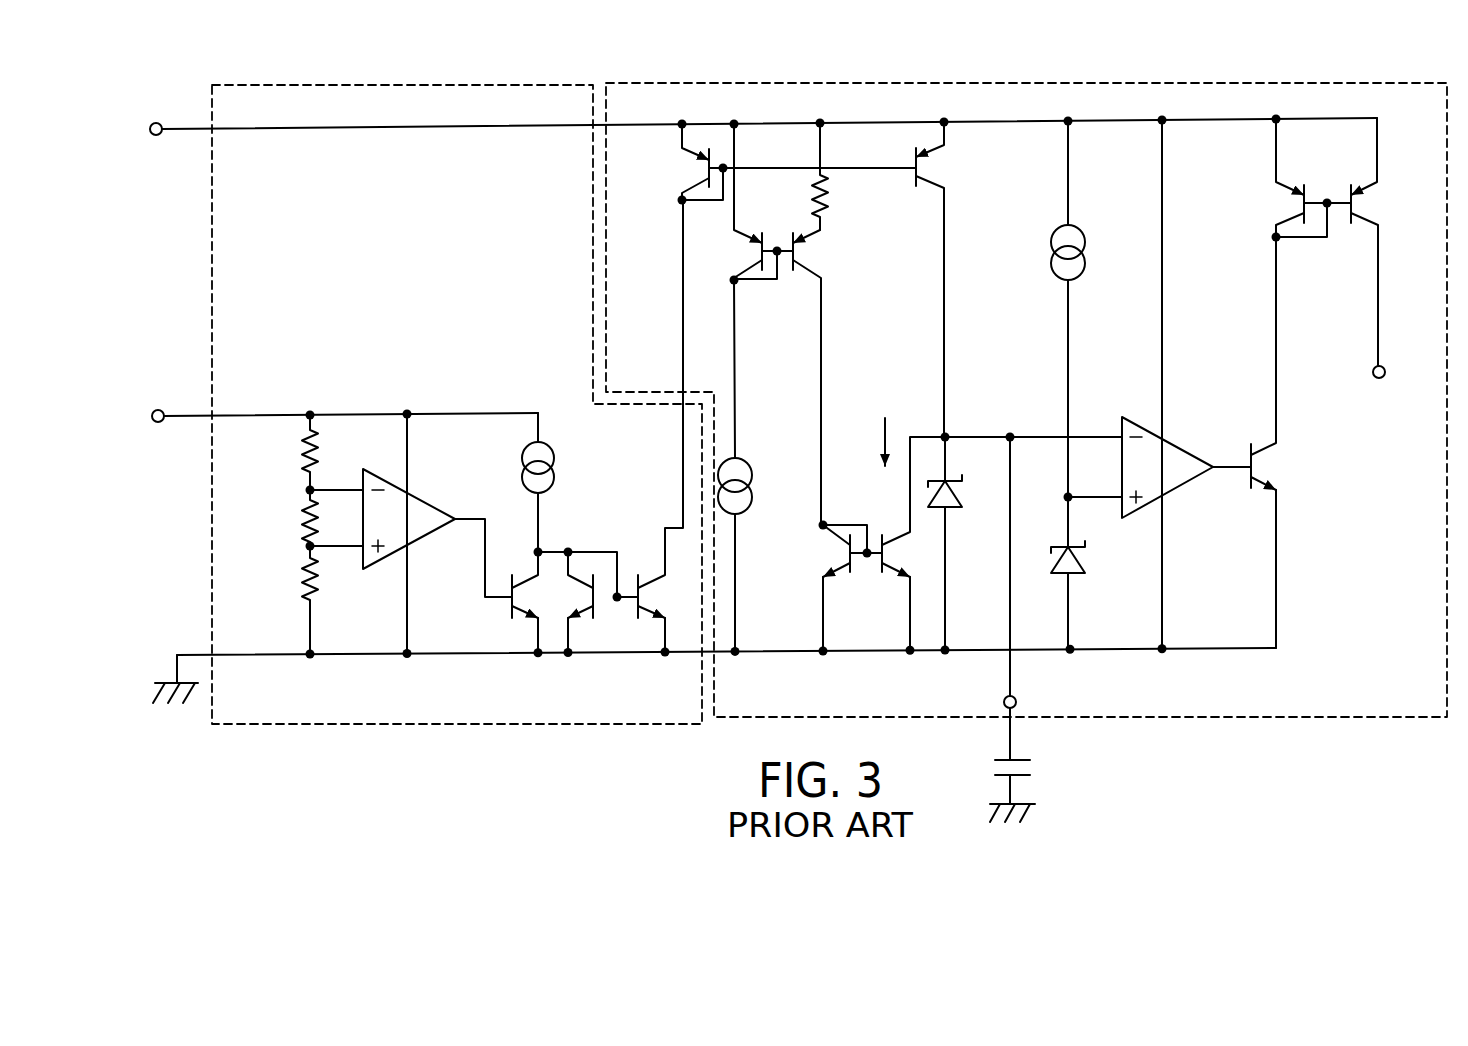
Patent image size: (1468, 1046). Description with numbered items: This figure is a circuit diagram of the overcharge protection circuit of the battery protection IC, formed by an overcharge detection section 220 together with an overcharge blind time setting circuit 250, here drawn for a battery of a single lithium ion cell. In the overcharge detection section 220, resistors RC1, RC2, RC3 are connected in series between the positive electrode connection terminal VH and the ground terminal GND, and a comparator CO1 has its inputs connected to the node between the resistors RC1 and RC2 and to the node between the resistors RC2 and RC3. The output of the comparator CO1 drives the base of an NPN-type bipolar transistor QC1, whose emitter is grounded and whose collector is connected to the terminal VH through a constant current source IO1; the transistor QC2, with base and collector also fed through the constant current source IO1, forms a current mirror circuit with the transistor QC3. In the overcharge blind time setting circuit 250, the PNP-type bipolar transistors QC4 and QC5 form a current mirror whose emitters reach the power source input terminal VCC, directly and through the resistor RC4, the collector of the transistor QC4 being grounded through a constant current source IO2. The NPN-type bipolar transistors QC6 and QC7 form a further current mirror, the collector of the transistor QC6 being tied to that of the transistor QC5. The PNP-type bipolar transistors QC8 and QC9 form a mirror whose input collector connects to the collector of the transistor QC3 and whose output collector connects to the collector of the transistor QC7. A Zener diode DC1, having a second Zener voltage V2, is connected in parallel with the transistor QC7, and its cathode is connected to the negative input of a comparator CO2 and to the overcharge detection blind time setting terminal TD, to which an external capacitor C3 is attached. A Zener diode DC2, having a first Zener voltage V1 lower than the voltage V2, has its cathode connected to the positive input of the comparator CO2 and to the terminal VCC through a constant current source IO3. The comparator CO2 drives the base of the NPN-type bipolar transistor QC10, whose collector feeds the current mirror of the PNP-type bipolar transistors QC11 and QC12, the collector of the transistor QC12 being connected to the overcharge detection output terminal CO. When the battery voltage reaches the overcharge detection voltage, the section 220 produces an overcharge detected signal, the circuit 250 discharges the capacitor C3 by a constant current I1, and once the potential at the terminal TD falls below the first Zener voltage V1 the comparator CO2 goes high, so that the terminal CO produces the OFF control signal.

The overcharge detection section 220 is at (253, 85).
The overcharge blind time setting circuit 250 is at (750, 83).
The power source input terminal VCC is at (752, 107).
The positive electrode connection terminal VH is at (339, 398).
The ground terminal GND is at (709, 661).
The resistor RC1 is at (279, 452).
The resistor RC2 is at (279, 518).
The resistor RC3 is at (279, 600).
The comparator CO1 is at (421, 499).
The constant current source IO1 is at (561, 482).
The NPN-type bipolar transistor QC1 is at (499, 586).
The NPN-type bipolar transistor QC2 is at (588, 586).
The NPN-type bipolar transistor QC3 is at (670, 426).
The PNP-type bipolar transistor QC4 is at (739, 204).
The PNP-type bipolar transistor QC5 is at (829, 377).
The NPN-type bipolar transistor QC6 is at (835, 586).
The NPN-type bipolar transistor QC7 is at (1002, 542).
The PNP-type bipolar transistor QC8 is at (774, 164).
The PNP-type bipolar transistor QC9 is at (953, 279).
The NPN-type bipolar transistor QC10 is at (1277, 442).
The PNP-type bipolar transistor QC11 is at (1281, 180).
The PNP-type bipolar transistor QC12 is at (1396, 242).
The resistor RC4 is at (848, 176).
The constant current source IO2 is at (758, 465).
The constant current source IO3 is at (1093, 309).
The constant current I1 is at (874, 442).
The Zener diode DC1 is at (968, 543).
The Zener diode DC2 is at (1099, 571).
The first Zener voltage V1 is at (1093, 540).
The second Zener voltage V2 is at (960, 478).
The comparator CO2 is at (1179, 442).
The overcharge detection output terminal CO is at (1398, 361).
The overcharge detection blind time setting terminal TD is at (994, 572).
The capacitor C3 is at (1040, 767).